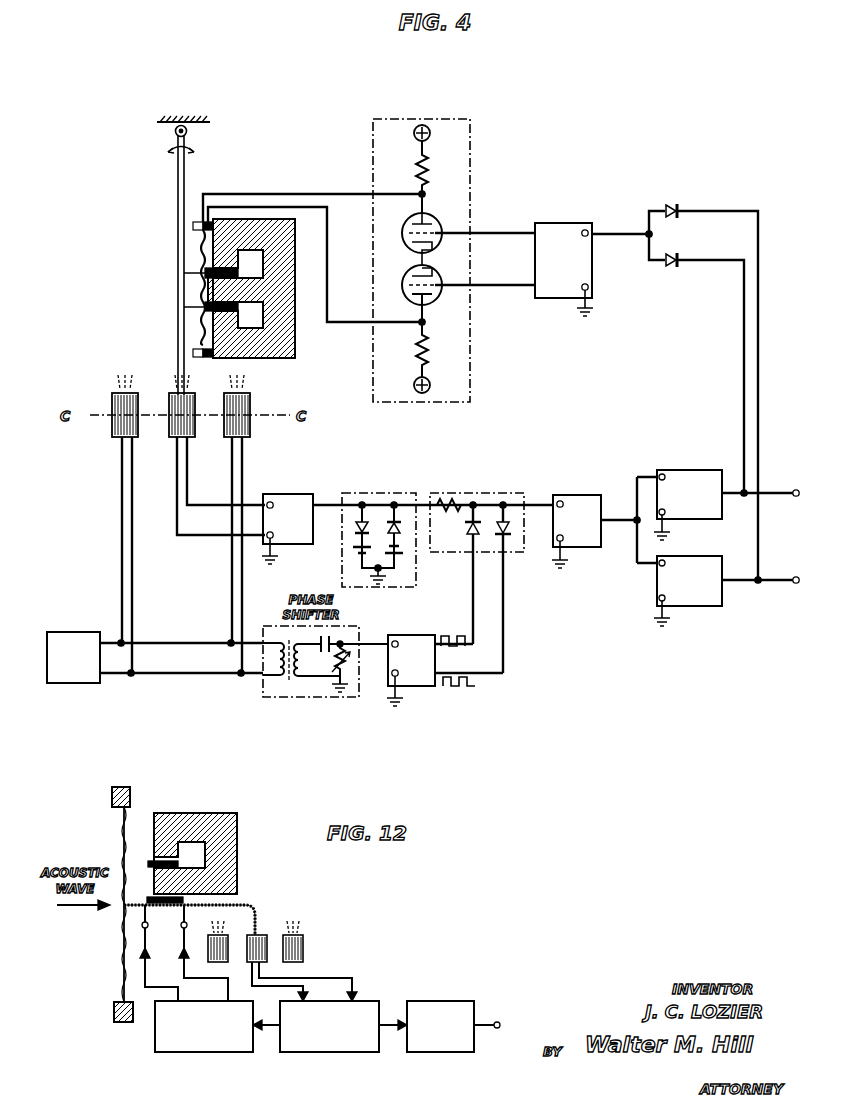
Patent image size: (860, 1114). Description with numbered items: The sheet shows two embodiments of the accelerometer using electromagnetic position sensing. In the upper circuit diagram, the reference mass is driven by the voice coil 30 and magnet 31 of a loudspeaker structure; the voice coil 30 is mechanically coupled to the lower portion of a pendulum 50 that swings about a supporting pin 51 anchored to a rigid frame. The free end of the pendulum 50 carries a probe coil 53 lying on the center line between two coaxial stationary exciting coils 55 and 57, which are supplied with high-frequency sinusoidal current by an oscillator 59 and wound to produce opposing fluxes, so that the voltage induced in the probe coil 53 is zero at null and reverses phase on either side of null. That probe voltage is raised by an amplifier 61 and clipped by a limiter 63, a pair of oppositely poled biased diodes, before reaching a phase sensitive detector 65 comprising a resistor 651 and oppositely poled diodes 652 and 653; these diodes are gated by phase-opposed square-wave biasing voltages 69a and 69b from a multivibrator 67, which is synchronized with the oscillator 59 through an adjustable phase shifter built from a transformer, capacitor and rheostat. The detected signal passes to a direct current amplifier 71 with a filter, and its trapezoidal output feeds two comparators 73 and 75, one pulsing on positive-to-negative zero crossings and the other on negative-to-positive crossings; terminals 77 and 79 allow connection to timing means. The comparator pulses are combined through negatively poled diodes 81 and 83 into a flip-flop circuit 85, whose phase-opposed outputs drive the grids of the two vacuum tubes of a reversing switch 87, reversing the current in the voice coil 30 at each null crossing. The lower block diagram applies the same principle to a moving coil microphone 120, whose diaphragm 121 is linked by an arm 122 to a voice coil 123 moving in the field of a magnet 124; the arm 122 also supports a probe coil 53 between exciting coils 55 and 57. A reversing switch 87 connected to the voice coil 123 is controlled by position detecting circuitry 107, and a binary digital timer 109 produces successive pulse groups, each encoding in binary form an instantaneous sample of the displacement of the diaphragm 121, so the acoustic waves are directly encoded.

In FIG. 4, the voice coil 30 is at (200, 318).
In FIG. 4, the magnet 31 is at (297, 336).
In FIG. 4, the pendulum 50 is at (178, 218).
In FIG. 4, the supporting pin 51 is at (194, 131).
In FIG. 4, the probe coil 53 is at (169, 437).
In FIG. 12, the probe coil 53 is at (265, 940).
In FIG. 4, the exciting coil 55 is at (112, 437).
In FIG. 12, the exciting coil 55 is at (208, 940).
In FIG. 4, the exciting coil 57 is at (248, 437).
In FIG. 12, the exciting coil 57 is at (302, 940).
In FIG. 4, the oscillator 59 is at (80, 632).
In FIG. 4, the amplifier 61 is at (285, 494).
In FIG. 4, the limiter 63 is at (400, 588).
In FIG. 4, the phase sensitive detector 65 is at (524, 493).
In FIG. 4, the resistor 651 is at (440, 502).
In FIG. 4, the diode 652 is at (468, 540).
In FIG. 4, the diode 653 is at (508, 540).
In FIG. 4, the multivibrator 67 is at (418, 688).
In FIG. 4, the biasing voltage 69a is at (462, 632).
In FIG. 4, the biasing voltage 69b is at (470, 690).
In FIG. 4, the direct current amplifier 71 is at (588, 495).
In FIG. 4, the comparator 73 is at (685, 470).
In FIG. 4, the comparator 75 is at (690, 606).
In FIG. 4, the terminal 77 is at (793, 488).
In FIG. 4, the terminal 79 is at (795, 590).
In FIG. 4, the diode 81 is at (670, 268).
In FIG. 4, the diode 83 is at (672, 204).
In FIG. 4, the flip-flop circuit 85 is at (560, 222).
In FIG. 4, the reversing switch 87 is at (470, 152).
In FIG. 12, the reversing switch 87 is at (198, 1052).
In FIG. 12, the position detecting circuitry 107 is at (372, 1001).
In FIG. 12, the binary digital timer 109 is at (445, 1001).
In FIG. 12, the moving coil microphone 120 is at (183, 800).
In FIG. 12, the diaphragm 121 is at (122, 864).
In FIG. 12, the arm 122 is at (248, 908).
In FIG. 12, the voice coil 123 is at (178, 858).
In FIG. 12, the magnet 124 is at (237, 826).